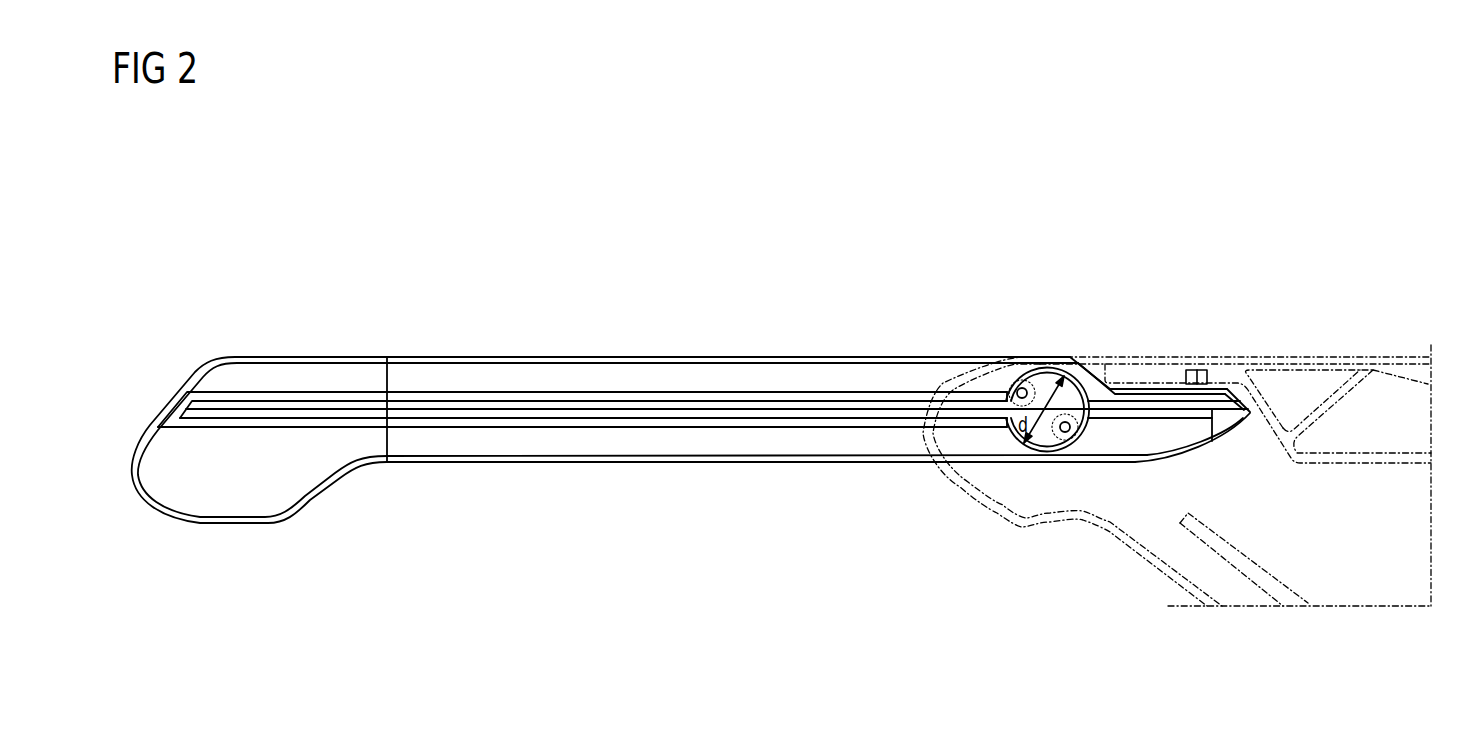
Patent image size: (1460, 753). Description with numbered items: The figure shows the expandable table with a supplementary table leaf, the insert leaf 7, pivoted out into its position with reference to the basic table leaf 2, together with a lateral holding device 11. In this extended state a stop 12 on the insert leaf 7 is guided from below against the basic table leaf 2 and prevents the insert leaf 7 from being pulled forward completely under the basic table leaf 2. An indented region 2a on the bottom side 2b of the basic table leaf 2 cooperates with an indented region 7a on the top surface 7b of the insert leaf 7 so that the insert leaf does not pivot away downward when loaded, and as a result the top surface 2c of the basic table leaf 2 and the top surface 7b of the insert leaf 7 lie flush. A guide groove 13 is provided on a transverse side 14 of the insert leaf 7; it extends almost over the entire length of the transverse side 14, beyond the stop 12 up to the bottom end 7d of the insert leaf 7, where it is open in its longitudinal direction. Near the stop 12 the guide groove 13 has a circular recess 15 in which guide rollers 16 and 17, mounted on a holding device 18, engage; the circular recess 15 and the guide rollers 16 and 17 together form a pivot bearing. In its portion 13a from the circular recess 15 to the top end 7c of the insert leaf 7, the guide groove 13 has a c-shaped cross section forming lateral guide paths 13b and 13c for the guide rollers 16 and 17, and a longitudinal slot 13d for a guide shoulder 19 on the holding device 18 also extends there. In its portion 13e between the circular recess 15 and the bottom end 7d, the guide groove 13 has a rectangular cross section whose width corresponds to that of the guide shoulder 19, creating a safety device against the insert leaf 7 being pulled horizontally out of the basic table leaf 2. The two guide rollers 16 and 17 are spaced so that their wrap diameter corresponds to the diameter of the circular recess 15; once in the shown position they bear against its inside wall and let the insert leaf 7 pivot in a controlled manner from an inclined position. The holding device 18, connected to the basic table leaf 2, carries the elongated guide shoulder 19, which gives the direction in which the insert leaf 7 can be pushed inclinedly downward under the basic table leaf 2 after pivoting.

The basic table leaf 2 is at (1118, 380).
The indented region 2a is at (1228, 383).
The bottom side 2b is at (1370, 465).
The top surface 2c is at (1367, 357).
The insert leaf 7 is at (690, 463).
The indented region 7a is at (1152, 388).
The top surface 7b is at (767, 357).
The top end 7c is at (155, 408).
The bottom end 7d is at (1260, 418).
The holding device 11 is at (1400, 593).
The stop 12 is at (1200, 372).
The guide groove 13 is at (637, 407).
The portion 13a is at (538, 404).
The lateral guide path 13b is at (458, 396).
The lateral guide path 13c is at (487, 422).
The longitudinal slot 13d is at (567, 413).
The portion 13e is at (1148, 404).
The transverse side 14 is at (717, 378).
The circular recess 15 is at (1061, 380).
The guide roller 16 is at (1035, 384).
The guide roller 17 is at (1062, 431).
The holding device 18 is at (1098, 531).
The guide shoulder 19 is at (1265, 568).